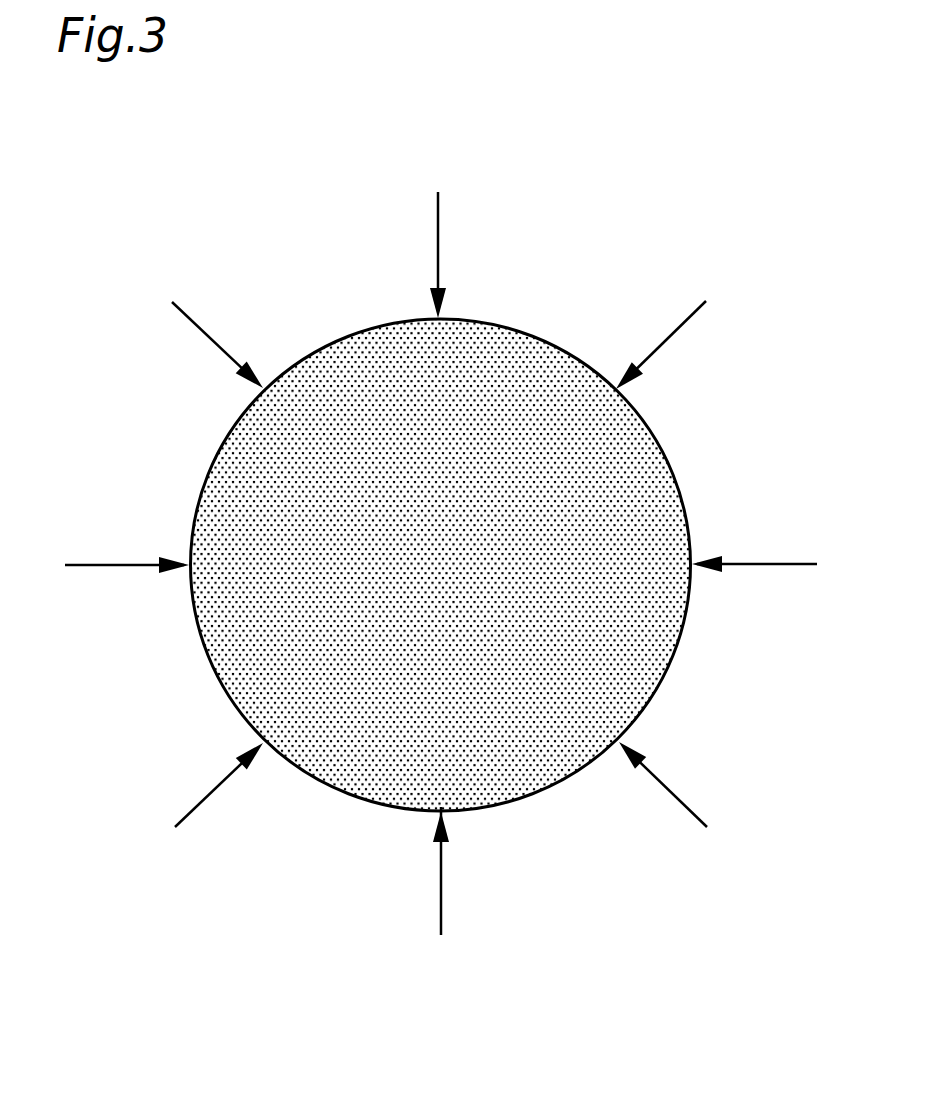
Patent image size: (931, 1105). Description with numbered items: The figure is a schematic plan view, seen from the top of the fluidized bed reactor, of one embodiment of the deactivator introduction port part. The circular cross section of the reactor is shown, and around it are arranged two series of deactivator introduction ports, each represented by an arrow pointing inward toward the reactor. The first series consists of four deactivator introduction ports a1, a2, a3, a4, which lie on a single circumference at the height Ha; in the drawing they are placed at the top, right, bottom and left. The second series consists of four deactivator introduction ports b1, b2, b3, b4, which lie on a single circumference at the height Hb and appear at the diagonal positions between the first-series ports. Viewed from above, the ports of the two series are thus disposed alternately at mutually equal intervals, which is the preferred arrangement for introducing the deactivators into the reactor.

The deactivator introduction port a1 is at (436, 237).
The deactivator introduction port a2 is at (776, 564).
The deactivator introduction port a3 is at (441, 891).
The deactivator introduction port a4 is at (105, 565).
The deactivator introduction port b1 is at (678, 329).
The deactivator introduction port b2 is at (681, 800).
The deactivator introduction port b3 is at (202, 801).
The deactivator introduction port b4 is at (201, 328).